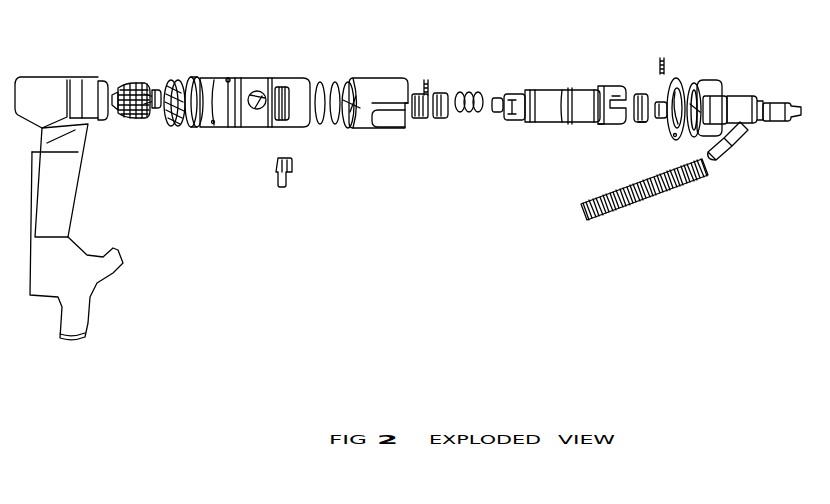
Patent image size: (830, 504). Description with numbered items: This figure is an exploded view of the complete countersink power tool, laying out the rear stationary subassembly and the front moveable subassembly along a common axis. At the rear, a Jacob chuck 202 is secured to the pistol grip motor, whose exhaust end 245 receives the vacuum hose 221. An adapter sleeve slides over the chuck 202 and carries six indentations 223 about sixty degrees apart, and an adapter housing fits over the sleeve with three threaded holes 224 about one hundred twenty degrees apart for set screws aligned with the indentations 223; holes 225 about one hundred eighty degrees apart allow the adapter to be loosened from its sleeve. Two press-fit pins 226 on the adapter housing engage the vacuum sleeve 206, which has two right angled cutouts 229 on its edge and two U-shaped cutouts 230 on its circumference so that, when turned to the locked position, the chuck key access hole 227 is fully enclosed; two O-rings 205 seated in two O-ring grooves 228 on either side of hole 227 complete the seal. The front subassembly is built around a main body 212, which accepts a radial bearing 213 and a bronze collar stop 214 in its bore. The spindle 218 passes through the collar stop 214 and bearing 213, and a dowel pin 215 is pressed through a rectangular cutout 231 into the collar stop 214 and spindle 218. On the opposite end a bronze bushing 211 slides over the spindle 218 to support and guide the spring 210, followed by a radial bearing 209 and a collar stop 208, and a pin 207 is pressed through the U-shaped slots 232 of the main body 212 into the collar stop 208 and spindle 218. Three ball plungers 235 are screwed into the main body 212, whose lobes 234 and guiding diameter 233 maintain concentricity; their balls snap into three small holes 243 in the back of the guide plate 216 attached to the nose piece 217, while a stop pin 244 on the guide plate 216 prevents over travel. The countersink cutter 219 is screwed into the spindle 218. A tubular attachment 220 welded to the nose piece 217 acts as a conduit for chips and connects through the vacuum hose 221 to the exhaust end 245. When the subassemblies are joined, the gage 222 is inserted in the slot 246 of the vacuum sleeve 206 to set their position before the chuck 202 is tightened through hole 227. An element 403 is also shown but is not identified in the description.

The Jacob chuck 202 is at (128, 85).
The pin 403 is at (157, 88).
The indentations 223 is at (175, 124).
The threaded holes 224 is at (196, 124).
The holes 225 is at (213, 124).
The pins 226 is at (228, 80).
The chuck key access hole 227 is at (258, 106).
The O-ring grooves 228 is at (268, 80).
The slot 246 is at (284, 86).
The O-rings 205 is at (335, 82).
The right angled cutouts 229 is at (347, 126).
The vacuum sleeve 206 is at (365, 78).
The U-shaped cutouts 230 is at (382, 128).
The pin 207 is at (426, 80).
The collar stop 208 is at (421, 119).
The radial bearing 209 is at (440, 119).
The spring 210 is at (470, 94).
The bronze bushing 211 is at (496, 113).
The U-shaped slots 232 is at (512, 92).
The main body 212 is at (553, 124).
The rectangular cutout 231 is at (612, 96).
The diameter 233 is at (618, 98).
The lobes 234 is at (603, 127).
The radial bearing 213 is at (640, 94).
The bronze collar stop 214 is at (643, 123).
The stop pin 244 is at (665, 120).
The small holes 243 is at (676, 137).
The dowel pin 215 is at (662, 58).
The guide plate 216 is at (694, 92).
The ball plungers 235 is at (704, 86).
The nose piece 217 is at (716, 84).
The spindle 218 is at (762, 125).
The countersink cutter 219 is at (788, 122).
The tubular attachment 220 is at (723, 162).
The vacuum hose 221 is at (665, 193).
The gage 222 is at (290, 178).
The exhaust end 245 is at (120, 258).